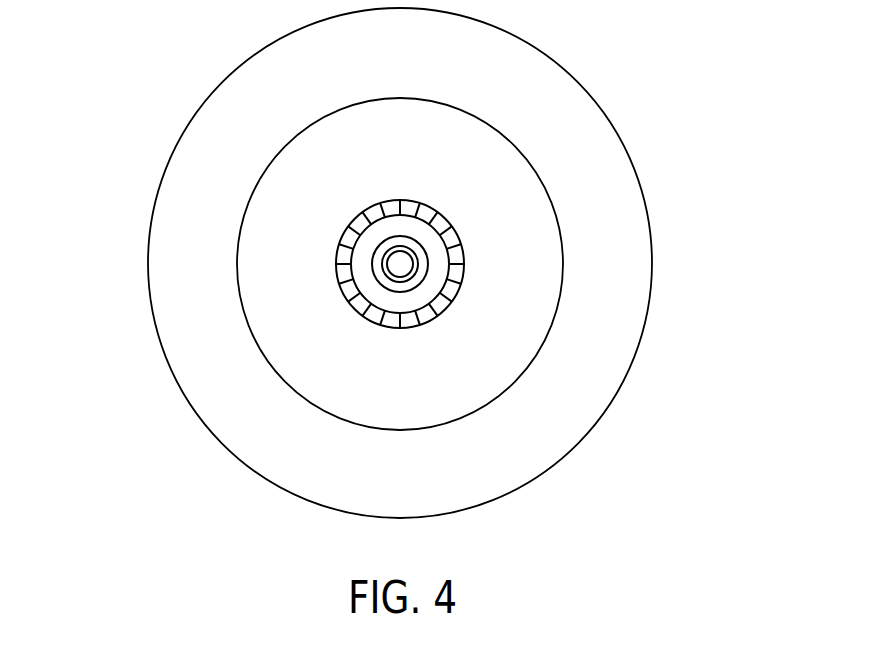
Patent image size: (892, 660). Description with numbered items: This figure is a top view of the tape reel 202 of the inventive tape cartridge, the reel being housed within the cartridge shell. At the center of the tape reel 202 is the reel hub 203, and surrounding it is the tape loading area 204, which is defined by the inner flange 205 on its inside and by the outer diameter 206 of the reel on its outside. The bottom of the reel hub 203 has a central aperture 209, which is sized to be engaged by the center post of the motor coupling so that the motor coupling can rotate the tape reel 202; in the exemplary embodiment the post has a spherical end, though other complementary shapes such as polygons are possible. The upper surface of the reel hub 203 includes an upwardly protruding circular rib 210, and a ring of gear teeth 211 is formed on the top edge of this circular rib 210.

The tape reel 202 is at (405, 271).
The reel hub 203 is at (267, 205).
The tape loading area 204 is at (262, 432).
The inner flange 205 is at (237, 285).
The outer diameter 206 is at (183, 390).
The central aperture 209 is at (403, 268).
The circular rib 210 is at (465, 265).
The ring of gear teeth 211 is at (438, 222).